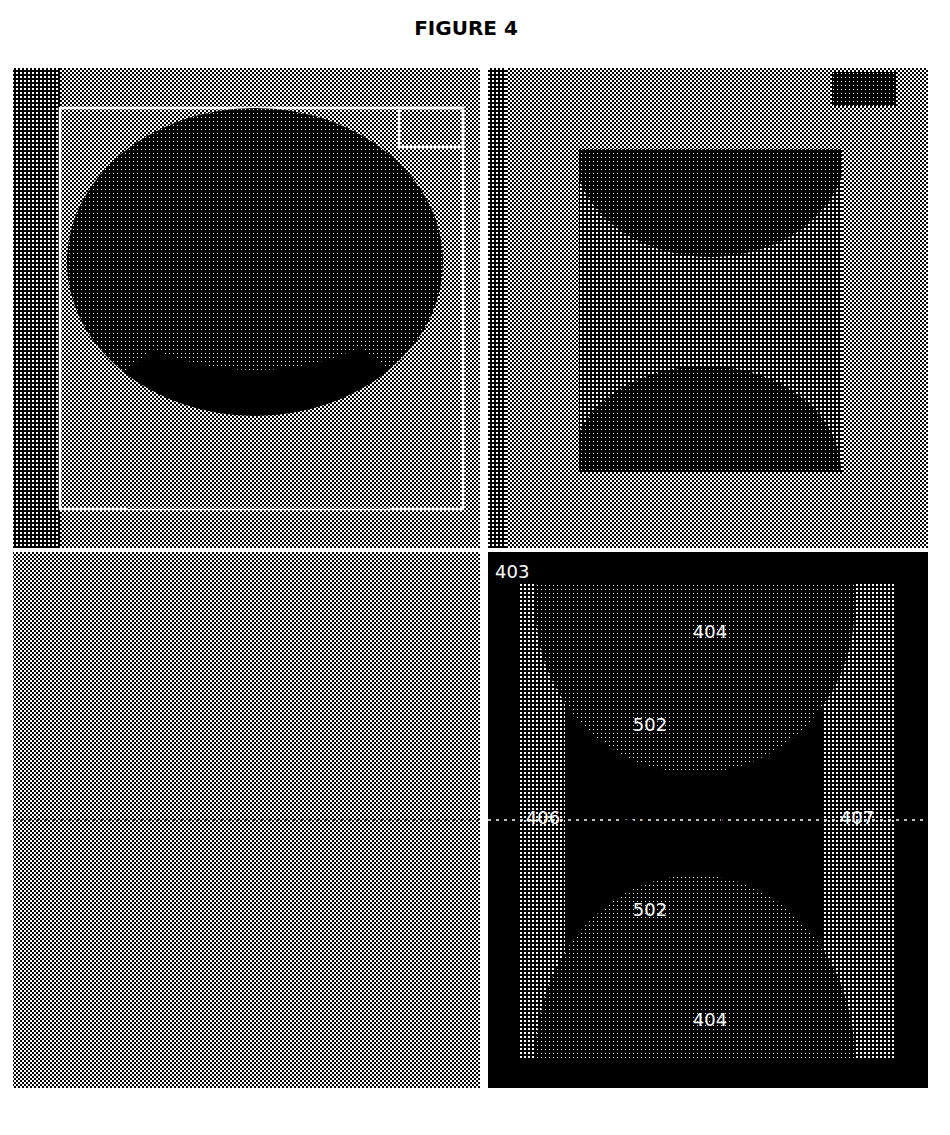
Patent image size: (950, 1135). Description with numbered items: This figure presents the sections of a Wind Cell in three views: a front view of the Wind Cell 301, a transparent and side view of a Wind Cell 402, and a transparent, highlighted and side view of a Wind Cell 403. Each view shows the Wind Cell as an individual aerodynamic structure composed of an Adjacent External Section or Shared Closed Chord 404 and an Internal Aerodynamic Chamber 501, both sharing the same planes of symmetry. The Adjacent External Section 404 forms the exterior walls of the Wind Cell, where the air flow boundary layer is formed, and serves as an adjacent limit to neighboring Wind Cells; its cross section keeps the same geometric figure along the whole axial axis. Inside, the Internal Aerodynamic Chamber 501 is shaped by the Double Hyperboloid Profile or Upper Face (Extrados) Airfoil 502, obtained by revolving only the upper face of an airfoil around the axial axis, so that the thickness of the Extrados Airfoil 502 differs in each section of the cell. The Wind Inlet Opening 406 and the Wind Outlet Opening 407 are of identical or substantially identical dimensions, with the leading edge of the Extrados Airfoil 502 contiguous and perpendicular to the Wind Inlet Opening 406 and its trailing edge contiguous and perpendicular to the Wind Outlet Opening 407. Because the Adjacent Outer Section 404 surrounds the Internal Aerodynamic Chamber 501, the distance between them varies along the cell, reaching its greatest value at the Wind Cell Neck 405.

The front view of the Wind Cell 301 is at (246, 308).
The transparent and side view of a Wind Cell 402 is at (246, 820).
The transparent, highlighted and side view of a Wind Cell 403 is at (708, 820).
The Adjacent External Section or Shared Closed Chord 404 is at (821, 77).
The Wind Cell Neck 405 is at (427, 578).
The Wind Inlet Opening 406 is at (296, 578).
The Wind Outlet Opening 407 is at (644, 578).
The Internal Aerodynamic Chamber 501 is at (454, 537).
The Double Hyperboloid Profile or Upper Face (Extrados) Airfoil 502 is at (505, 589).